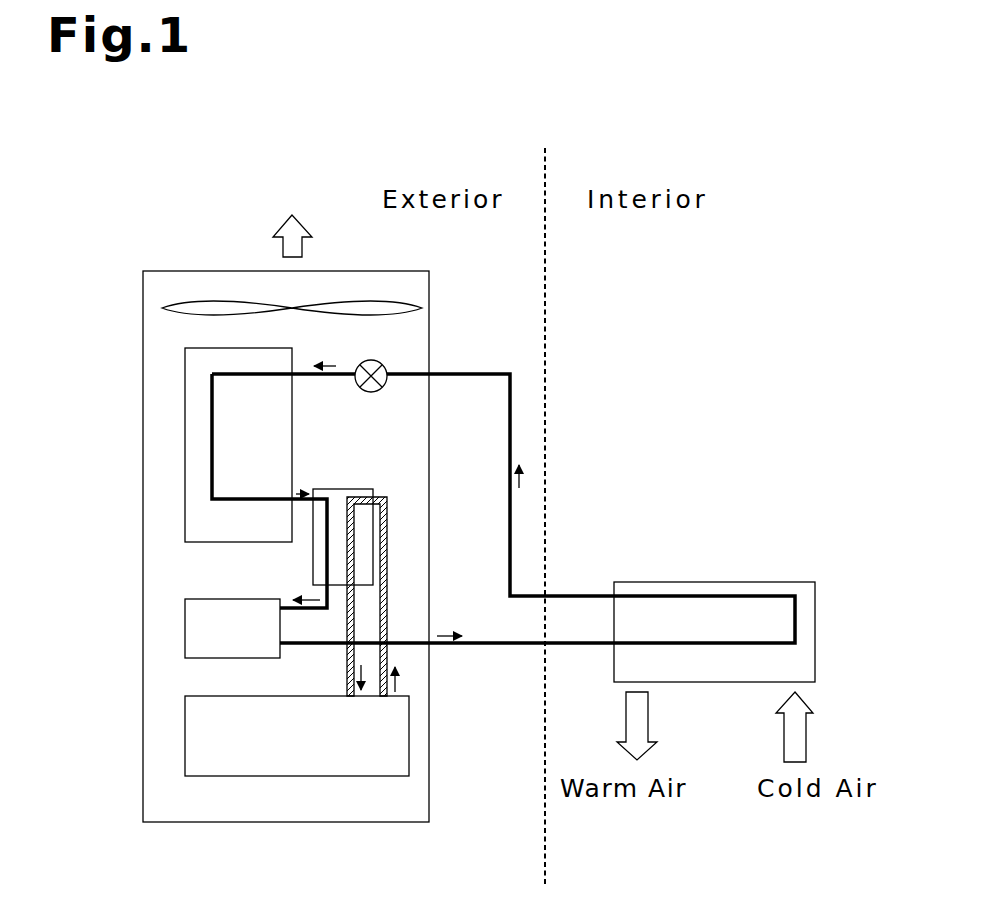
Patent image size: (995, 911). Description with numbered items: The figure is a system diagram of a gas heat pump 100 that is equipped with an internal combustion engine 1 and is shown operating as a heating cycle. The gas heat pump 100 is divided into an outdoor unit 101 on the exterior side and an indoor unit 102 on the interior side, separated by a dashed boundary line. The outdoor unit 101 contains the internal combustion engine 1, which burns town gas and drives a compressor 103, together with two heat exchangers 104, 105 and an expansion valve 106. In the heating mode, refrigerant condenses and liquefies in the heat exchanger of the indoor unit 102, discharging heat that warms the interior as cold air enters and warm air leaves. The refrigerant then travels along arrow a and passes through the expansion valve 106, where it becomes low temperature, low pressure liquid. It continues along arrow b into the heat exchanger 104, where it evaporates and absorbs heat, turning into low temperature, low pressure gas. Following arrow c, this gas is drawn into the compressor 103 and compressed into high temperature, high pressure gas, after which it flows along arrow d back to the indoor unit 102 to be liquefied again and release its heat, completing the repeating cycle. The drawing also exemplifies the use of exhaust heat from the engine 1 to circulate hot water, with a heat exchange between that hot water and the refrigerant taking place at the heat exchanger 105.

The gas heat pump 100 is at (381, 156).
The outdoor unit 101 is at (187, 270).
The indoor unit 102 is at (787, 583).
The compressor 103 is at (185, 628).
The heat exchanger 104 is at (185, 527).
The heat exchanger 105 is at (357, 489).
The expansion valve 106 is at (362, 364).
The internal combustion engine 1 is at (222, 765).
The arrow a is at (523, 475).
The arrow b is at (323, 365).
The arrow c is at (300, 491).
The arrow d is at (451, 633).